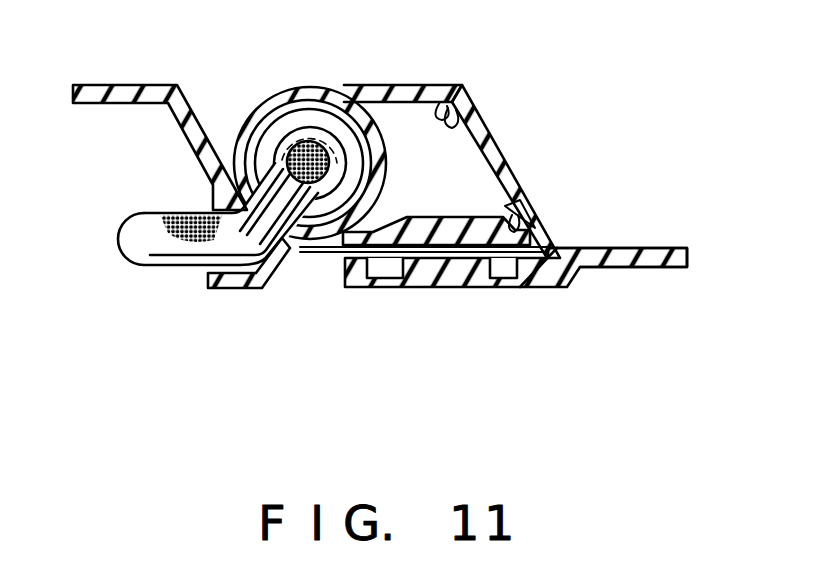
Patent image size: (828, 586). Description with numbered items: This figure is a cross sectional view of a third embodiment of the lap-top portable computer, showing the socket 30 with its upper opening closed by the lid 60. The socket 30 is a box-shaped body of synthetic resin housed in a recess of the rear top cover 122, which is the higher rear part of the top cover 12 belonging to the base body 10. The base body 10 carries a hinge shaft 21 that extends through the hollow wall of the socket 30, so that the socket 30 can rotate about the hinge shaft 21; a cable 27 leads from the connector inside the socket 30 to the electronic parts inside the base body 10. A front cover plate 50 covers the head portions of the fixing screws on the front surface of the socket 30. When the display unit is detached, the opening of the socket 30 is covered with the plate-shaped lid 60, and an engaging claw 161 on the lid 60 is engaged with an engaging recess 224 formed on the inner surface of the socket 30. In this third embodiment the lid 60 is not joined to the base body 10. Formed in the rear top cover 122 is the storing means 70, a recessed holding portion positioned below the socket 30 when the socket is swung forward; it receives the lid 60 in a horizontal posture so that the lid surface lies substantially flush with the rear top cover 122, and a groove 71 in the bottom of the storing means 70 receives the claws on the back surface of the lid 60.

The base body 10 is at (103, 80).
The rear top cover 122 is at (155, 93).
The hinge shaft 21 is at (272, 124).
The cable 27 is at (200, 264).
The socket 30 is at (393, 86).
The lid 60 is at (503, 153).
The engaging recess 224 is at (437, 103).
The engaging claw 161 is at (462, 118).
The front cover plate 50 is at (437, 218).
The storing means 70 is at (447, 262).
The top cover 12 is at (643, 247).
The groove 71 is at (380, 263).